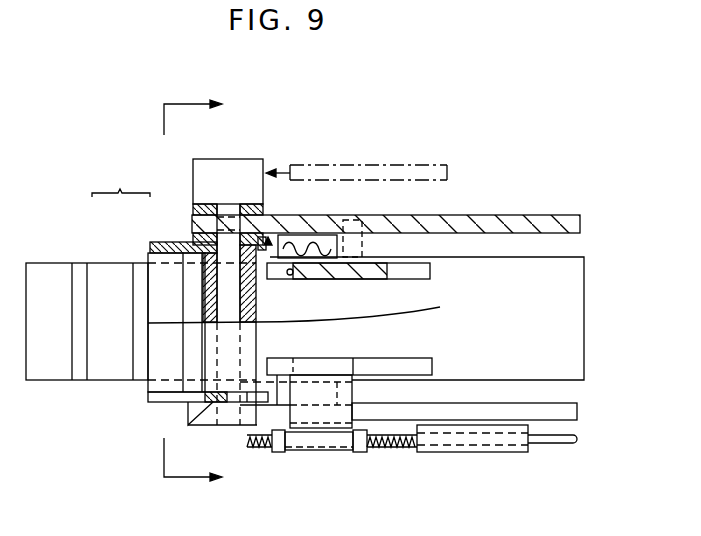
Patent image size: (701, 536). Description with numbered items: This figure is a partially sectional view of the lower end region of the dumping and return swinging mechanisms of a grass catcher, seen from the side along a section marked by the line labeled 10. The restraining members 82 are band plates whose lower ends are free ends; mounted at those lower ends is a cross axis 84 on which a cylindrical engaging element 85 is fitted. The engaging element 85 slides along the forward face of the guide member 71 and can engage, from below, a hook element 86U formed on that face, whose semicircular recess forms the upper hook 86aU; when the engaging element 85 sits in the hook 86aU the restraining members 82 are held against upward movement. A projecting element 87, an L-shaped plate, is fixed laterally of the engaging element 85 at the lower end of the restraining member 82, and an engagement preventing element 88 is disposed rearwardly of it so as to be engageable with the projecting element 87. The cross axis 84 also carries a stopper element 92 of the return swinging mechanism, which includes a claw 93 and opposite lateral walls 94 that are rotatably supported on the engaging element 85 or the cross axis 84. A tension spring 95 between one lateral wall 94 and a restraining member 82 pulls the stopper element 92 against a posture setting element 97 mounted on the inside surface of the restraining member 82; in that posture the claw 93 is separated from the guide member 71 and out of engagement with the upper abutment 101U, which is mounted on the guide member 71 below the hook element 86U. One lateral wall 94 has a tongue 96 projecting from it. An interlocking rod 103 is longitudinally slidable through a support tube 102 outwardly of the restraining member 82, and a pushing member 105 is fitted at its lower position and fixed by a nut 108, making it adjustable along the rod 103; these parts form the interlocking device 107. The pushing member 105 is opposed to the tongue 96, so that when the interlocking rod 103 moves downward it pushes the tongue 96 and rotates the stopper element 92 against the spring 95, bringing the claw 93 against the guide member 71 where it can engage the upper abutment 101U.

The section line 10- 10 is at (210, 298).
The guide member 71 is at (580, 265).
The restraining members 82 is at (528, 222).
The cross axis 84 is at (233, 296).
The engaging element 85 is at (258, 325).
The upper hook element 86U is at (383, 278).
The upper hook 86aU is at (292, 274).
The projecting element 87 is at (248, 162).
The engagement preventing element 88 is at (381, 165).
The stopper element 92 is at (121, 181).
The claw 93 is at (152, 295).
The lateral walls 94 is at (178, 247).
The tension spring 95 is at (352, 226).
The tongue 96 is at (213, 404).
The posture setting element 97 is at (295, 240).
The upper abutment 101U is at (104, 367).
The support tube 102 is at (490, 447).
The interlocking rod 103 is at (408, 450).
The pushing member 105 is at (345, 395).
The interlocking device 107 is at (588, 450).
The nut 108 is at (278, 451).